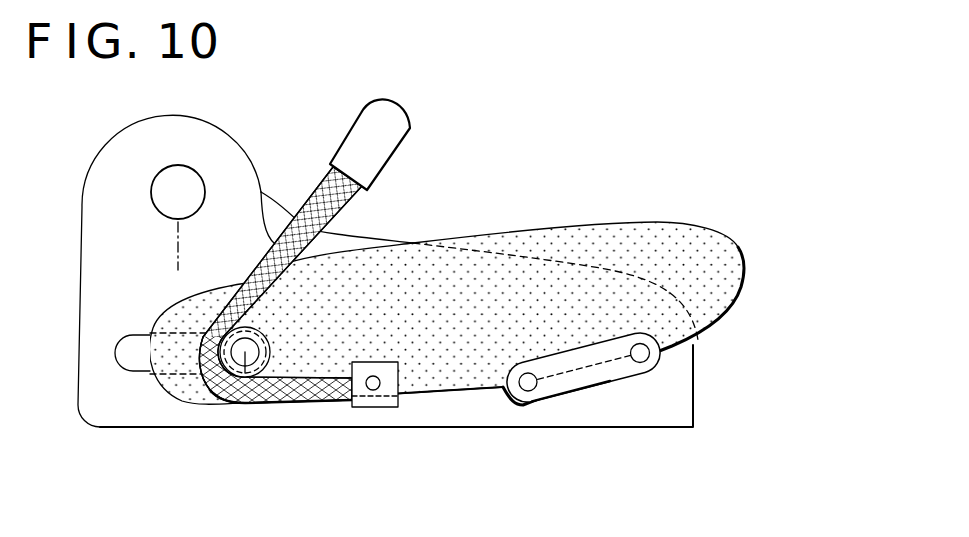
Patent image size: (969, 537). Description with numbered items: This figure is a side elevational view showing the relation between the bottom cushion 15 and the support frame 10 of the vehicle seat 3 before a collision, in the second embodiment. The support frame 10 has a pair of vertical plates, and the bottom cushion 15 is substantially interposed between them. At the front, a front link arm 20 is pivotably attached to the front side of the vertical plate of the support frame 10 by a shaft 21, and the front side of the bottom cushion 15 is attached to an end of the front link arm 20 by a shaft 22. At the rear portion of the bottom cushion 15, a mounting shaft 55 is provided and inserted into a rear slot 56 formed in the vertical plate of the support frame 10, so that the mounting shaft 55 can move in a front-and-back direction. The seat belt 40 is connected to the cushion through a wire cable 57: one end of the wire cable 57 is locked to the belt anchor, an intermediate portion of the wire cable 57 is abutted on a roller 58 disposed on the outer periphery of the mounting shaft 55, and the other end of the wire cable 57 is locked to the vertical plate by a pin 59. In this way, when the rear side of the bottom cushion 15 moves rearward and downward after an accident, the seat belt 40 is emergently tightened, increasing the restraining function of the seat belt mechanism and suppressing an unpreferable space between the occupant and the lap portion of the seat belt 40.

The vehicle seat 3 is at (507, 191).
The support frame 10 is at (672, 394).
The bottom cushion 15 is at (687, 247).
The front link arm 20 is at (577, 370).
The shaft 21 is at (527, 388).
The shaft 22 is at (643, 360).
The seat belt 40 is at (404, 132).
The mounting shaft 55 is at (248, 395).
The rear slot 56 is at (137, 358).
The wire cable 57 is at (268, 212).
The roller 58 is at (218, 384).
The pin 59 is at (377, 398).